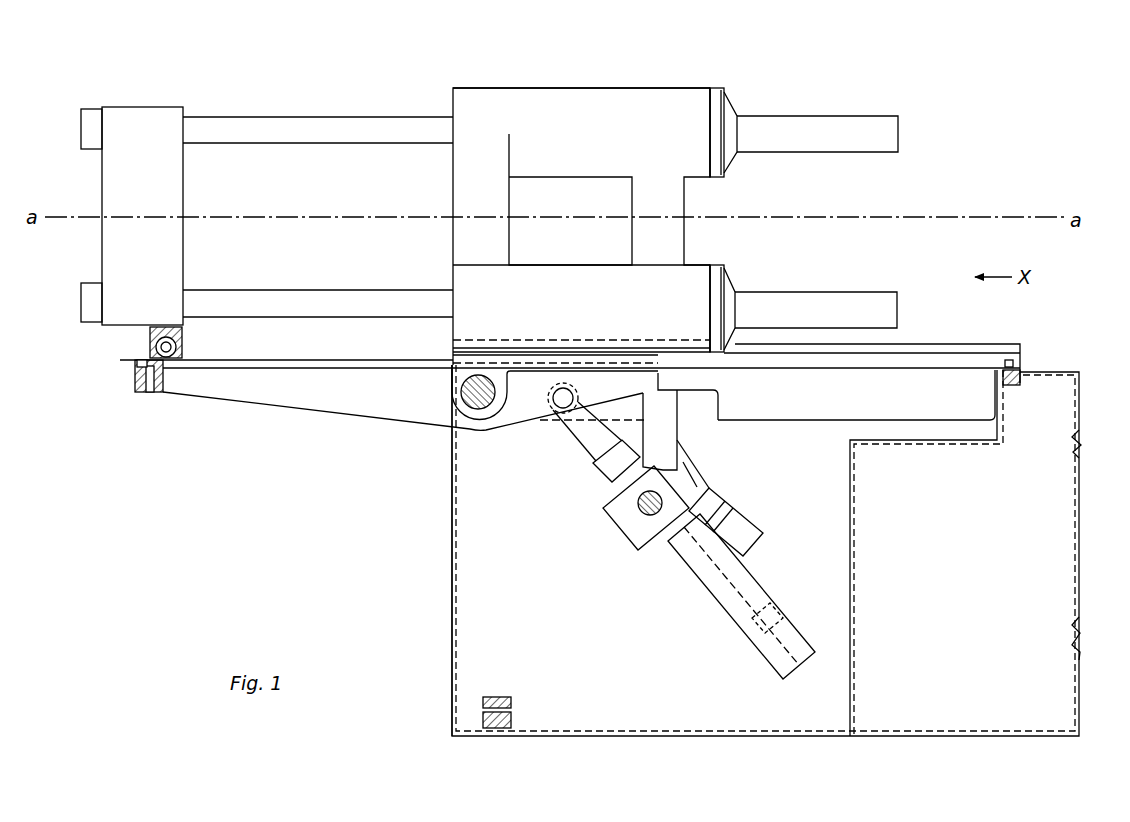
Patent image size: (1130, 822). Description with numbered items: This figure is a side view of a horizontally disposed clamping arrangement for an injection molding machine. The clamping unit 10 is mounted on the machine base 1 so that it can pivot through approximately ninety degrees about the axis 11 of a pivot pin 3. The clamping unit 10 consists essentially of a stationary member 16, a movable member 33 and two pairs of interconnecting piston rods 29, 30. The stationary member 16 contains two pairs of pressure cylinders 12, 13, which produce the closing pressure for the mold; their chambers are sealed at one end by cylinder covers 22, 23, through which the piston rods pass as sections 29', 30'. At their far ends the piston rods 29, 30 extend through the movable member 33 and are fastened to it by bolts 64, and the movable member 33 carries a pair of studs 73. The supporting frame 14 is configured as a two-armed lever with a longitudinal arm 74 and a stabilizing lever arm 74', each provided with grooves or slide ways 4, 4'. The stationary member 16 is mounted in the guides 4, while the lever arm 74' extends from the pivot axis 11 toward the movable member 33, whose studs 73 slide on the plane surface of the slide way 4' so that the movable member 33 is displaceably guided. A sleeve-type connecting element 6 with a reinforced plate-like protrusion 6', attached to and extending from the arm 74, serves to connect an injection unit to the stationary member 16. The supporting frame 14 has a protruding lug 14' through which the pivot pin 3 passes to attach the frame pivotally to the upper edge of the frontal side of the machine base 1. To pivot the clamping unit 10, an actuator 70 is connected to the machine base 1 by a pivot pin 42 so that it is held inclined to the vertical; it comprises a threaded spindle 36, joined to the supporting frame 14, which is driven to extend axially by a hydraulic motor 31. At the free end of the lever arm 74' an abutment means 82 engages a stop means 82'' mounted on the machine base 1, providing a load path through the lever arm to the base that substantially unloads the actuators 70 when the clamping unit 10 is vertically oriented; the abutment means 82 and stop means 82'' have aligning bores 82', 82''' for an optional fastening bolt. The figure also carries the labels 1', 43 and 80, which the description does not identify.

The machine base 1 is at (766, 550).
The frame wall 1' is at (427, 550).
The pivot pin 3 is at (470, 420).
The grooves or slide ways or guides 4 is at (839, 307).
The grooves or slide ways or guides 4' is at (494, 403).
The sleeve-type connecting element 6 is at (728, 435).
The plate-like protrusion 6' is at (723, 430).
The clamping unit 10 is at (625, 75).
The axis 11 is at (461, 392).
The pressure cylinders 12 is at (656, 88).
The pressure cylinders 13 is at (693, 266).
The supporting frame 14 is at (403, 421).
The lugs 14' is at (488, 373).
The stationary member 16 is at (451, 190).
The cylinder covers 22 is at (717, 105).
The cylinder covers 23 is at (717, 278).
The piston rods 29 is at (318, 94).
The piston rod sections 29' is at (817, 99).
The piston rods 30 is at (318, 374).
The piston rod sections 30' is at (819, 280).
The hydraulic motor 31 is at (735, 512).
The movable member 33 is at (146, 117).
The threaded spindle 36 is at (583, 443).
The pivot pin 42 is at (618, 500).
The connecting link 43 is at (553, 407).
The bolts 64 is at (93, 118).
The actuators 70 is at (620, 537).
The studs 73 is at (150, 330).
The arm 74 is at (767, 326).
The lever arm 74' is at (316, 425).
The guide block 80 is at (1020, 360).
The abutment means 82 is at (338, 362).
The aligning bore 82' is at (139, 392).
The stop means 82'' is at (525, 692).
The aligning bore 82''' is at (525, 716).